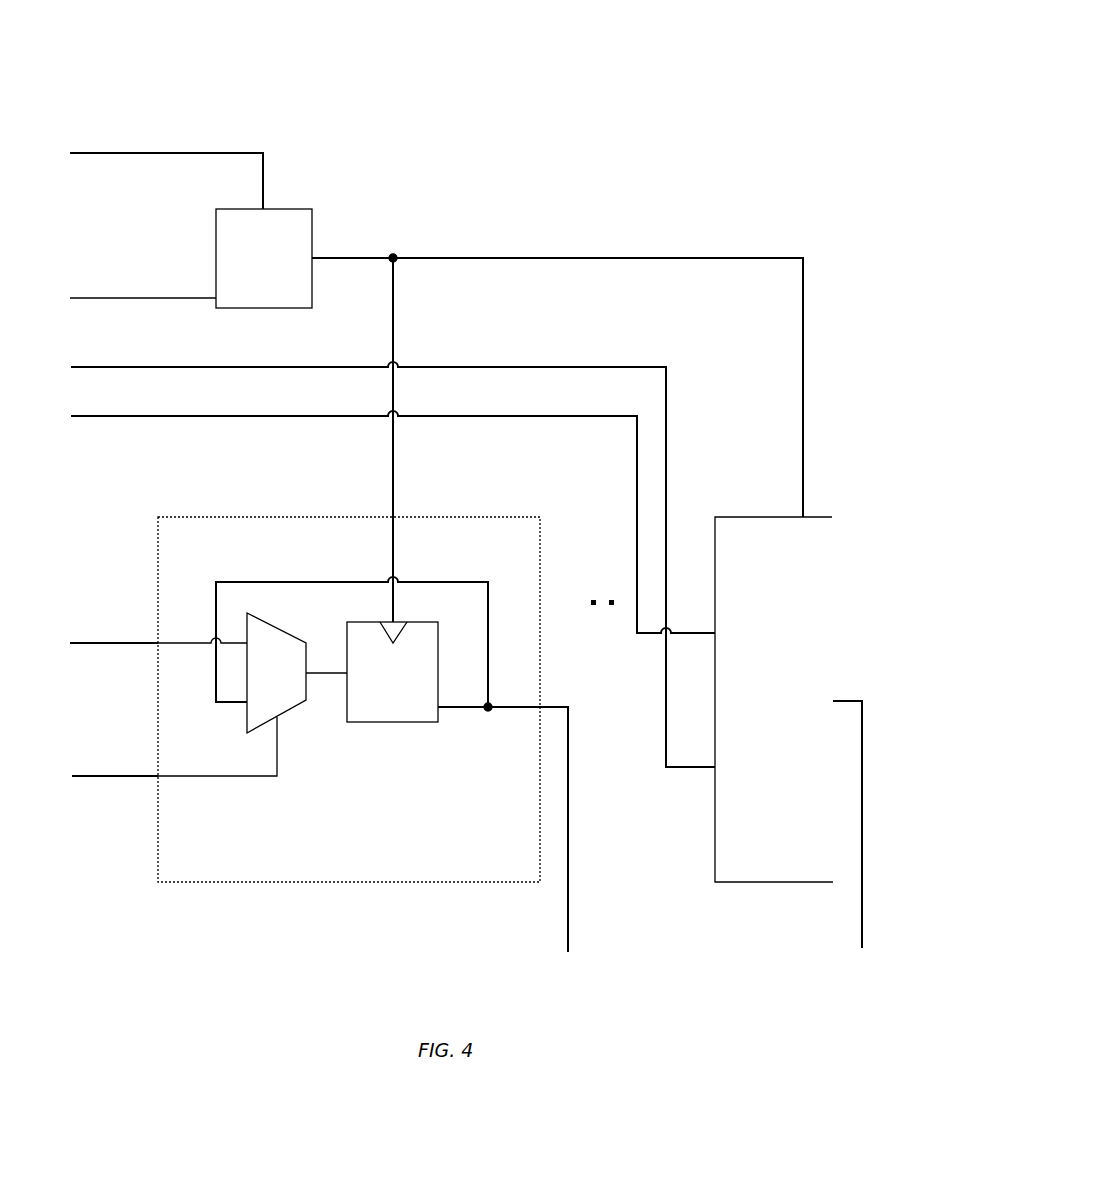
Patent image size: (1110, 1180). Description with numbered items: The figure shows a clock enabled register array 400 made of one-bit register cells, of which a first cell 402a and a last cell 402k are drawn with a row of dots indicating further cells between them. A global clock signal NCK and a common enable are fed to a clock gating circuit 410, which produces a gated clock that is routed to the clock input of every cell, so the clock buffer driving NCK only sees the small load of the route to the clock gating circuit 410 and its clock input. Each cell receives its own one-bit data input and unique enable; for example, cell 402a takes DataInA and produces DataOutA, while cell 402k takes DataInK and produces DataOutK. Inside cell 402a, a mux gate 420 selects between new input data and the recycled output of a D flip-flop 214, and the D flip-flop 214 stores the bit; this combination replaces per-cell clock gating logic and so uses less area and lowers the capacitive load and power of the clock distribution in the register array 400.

The clock enabled register array 400 is at (542, 65).
The clock gating circuit 410 is at (314, 207).
The register array cell 402a is at (349, 516).
The register array cell 402k is at (773, 514).
The mux gate 420 is at (305, 706).
The D flip-flop 214 is at (394, 725).